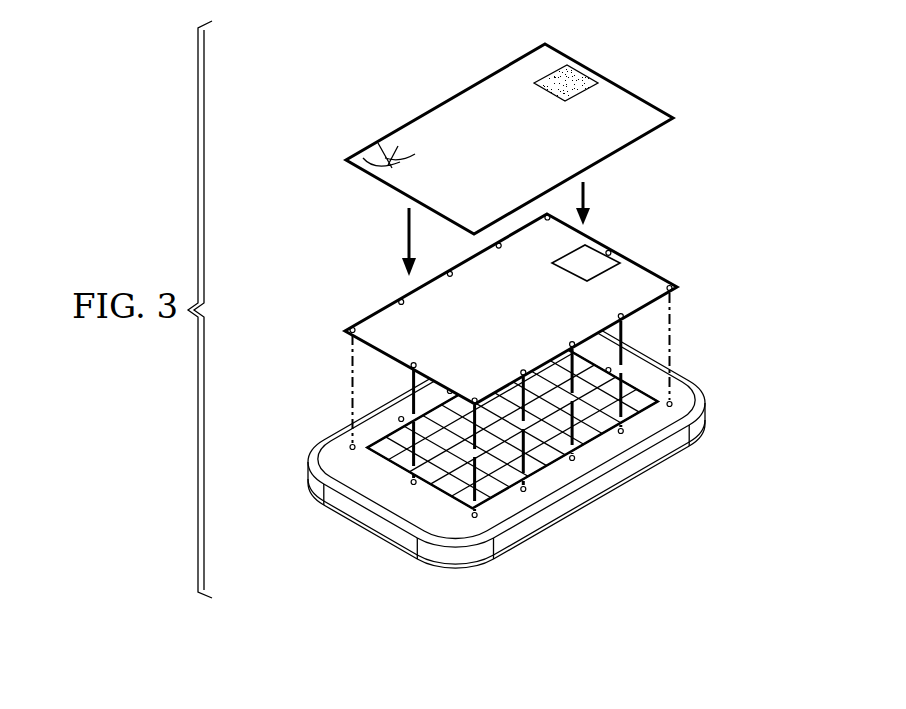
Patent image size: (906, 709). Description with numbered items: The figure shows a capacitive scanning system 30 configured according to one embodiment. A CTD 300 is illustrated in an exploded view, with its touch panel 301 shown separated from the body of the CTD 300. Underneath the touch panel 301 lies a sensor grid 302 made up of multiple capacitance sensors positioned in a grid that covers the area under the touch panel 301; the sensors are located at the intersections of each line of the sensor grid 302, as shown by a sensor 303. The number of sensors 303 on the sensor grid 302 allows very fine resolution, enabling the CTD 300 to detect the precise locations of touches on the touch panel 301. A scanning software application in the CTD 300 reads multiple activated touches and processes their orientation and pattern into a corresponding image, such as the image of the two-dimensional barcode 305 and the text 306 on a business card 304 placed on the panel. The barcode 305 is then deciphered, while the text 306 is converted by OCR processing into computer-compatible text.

The capacitive scanning system 30 is at (285, 228).
The CTD 300 is at (525, 449).
The touch panel 301 is at (379, 318).
The sensor grid 302 is at (417, 505).
The sensor 303 is at (638, 388).
The business card 304 is at (508, 127).
The 2-D barcode 305 is at (583, 81).
The text 306 is at (562, 127).